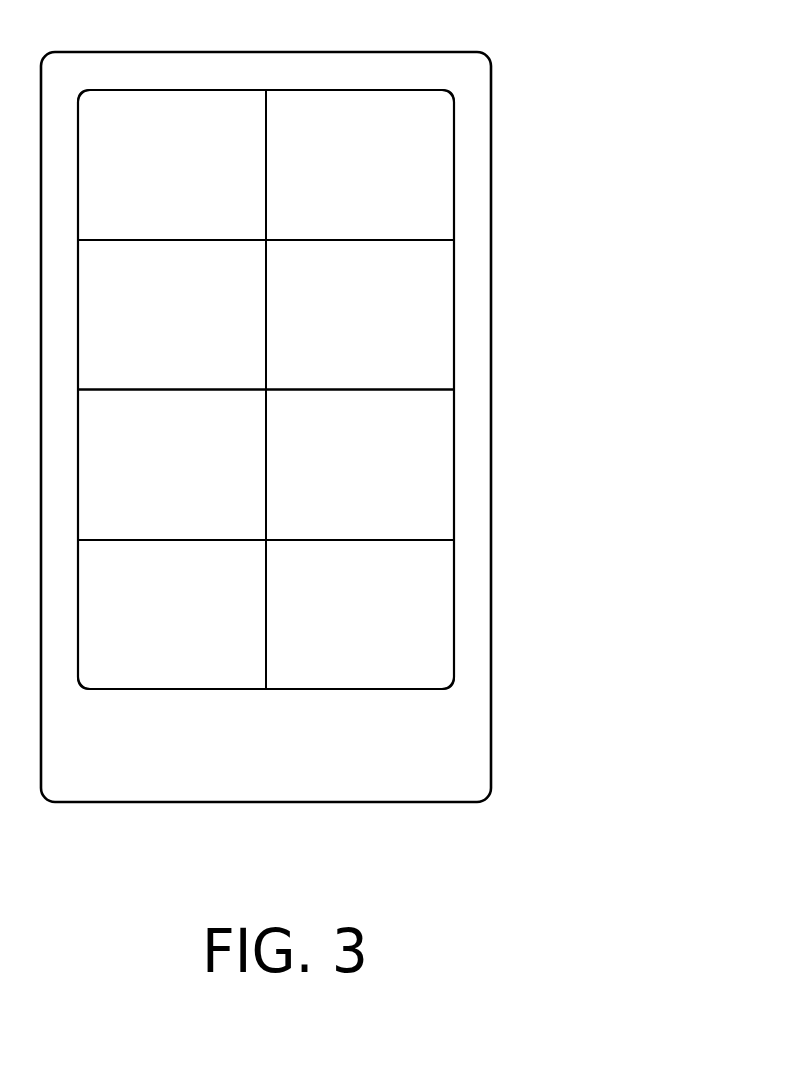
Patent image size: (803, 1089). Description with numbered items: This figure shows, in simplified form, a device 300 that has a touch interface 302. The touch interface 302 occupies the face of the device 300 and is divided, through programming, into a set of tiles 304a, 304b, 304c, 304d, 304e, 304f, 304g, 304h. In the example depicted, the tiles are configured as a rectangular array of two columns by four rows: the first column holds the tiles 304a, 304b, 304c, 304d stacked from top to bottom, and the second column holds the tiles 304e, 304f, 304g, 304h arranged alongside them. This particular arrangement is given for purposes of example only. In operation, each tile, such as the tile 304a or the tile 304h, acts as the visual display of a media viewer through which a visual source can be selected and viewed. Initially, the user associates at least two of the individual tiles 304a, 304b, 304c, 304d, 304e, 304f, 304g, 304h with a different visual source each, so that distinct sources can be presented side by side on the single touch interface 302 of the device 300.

The device 300 is at (548, 146).
The touch interface 302 is at (455, 315).
The tile 304a is at (200, 177).
The tile 304b is at (200, 327).
The tile 304c is at (200, 476).
The tile 304d is at (200, 626).
The tile 304e is at (388, 177).
The tile 304f is at (386, 327).
The tile 304g is at (390, 476).
The tile 304h is at (388, 626).